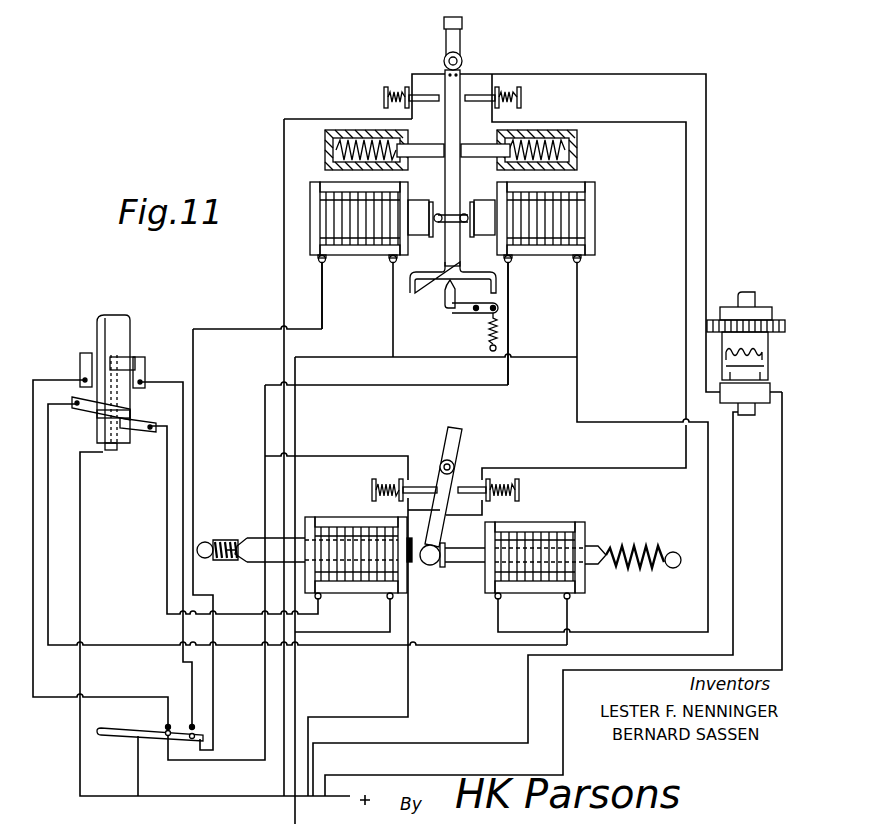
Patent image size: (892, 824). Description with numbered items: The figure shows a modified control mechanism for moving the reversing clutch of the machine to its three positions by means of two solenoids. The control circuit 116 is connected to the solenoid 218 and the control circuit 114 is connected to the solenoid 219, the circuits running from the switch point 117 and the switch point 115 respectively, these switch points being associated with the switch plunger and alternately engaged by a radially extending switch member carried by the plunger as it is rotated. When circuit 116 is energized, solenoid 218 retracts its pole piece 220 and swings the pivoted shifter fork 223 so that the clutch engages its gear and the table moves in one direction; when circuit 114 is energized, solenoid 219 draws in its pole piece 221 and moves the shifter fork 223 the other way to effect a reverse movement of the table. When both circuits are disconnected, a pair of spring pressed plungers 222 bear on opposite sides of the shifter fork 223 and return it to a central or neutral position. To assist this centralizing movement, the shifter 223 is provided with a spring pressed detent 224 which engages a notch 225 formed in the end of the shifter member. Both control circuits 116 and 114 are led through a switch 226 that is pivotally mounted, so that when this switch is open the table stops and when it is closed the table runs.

The control circuit 114 is at (509, 305).
The switch point 115 is at (90, 352).
The control circuit 116 is at (323, 292).
The switch point 117 is at (144, 358).
The solenoid 218 is at (328, 188).
The solenoid 219 is at (576, 194).
The pole piece 220 is at (418, 213).
The pole piece 221 is at (483, 215).
The spring pressed plungers 222 is at (413, 150).
The pivoted shifter fork 223 is at (454, 90).
The spring pressed detent 224 is at (456, 314).
The notch 225 is at (446, 285).
The switch 226 is at (152, 727).